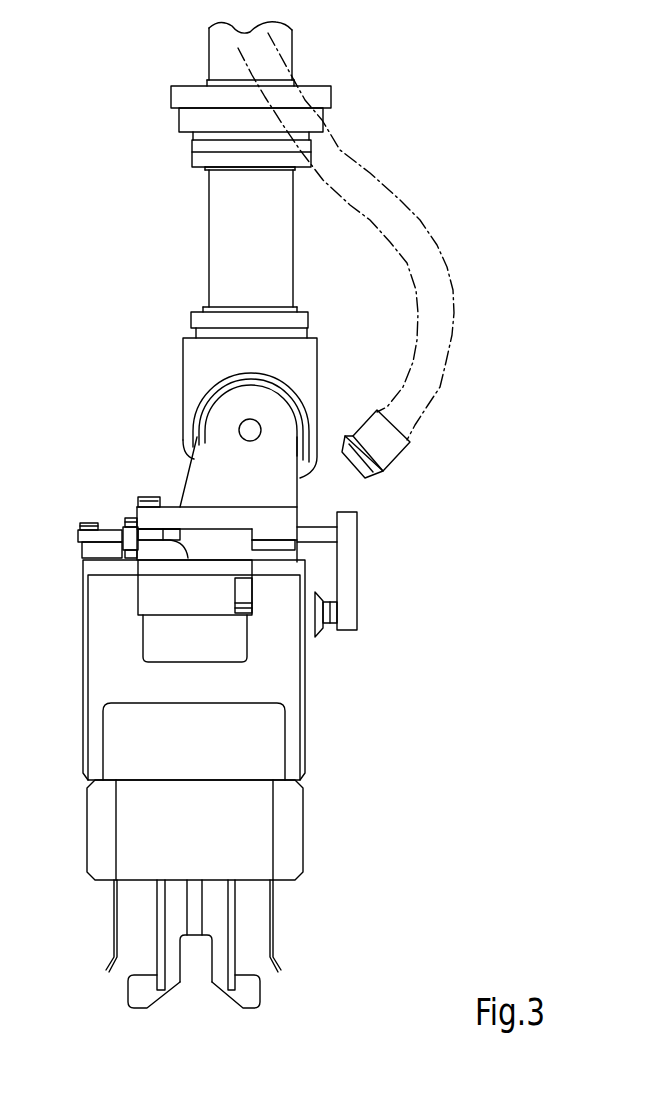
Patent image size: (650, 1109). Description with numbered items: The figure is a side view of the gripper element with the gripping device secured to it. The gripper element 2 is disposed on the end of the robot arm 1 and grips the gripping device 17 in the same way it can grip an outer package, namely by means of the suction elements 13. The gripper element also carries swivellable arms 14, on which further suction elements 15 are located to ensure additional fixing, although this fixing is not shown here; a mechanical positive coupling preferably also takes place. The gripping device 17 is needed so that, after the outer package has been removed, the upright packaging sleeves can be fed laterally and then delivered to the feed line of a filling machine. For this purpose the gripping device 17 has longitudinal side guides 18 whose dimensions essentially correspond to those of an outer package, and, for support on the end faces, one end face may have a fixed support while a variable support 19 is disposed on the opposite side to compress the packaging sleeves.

The robot arm 1 is at (227, 240).
The gripper element 2 is at (203, 483).
The suction elements 13 is at (155, 553).
The swivellable arms 14 is at (347, 583).
The suction elements 15 is at (322, 630).
The gripping device 17 is at (108, 662).
The longitudinal side guides 18 is at (113, 903).
The variable support 19 is at (170, 930).